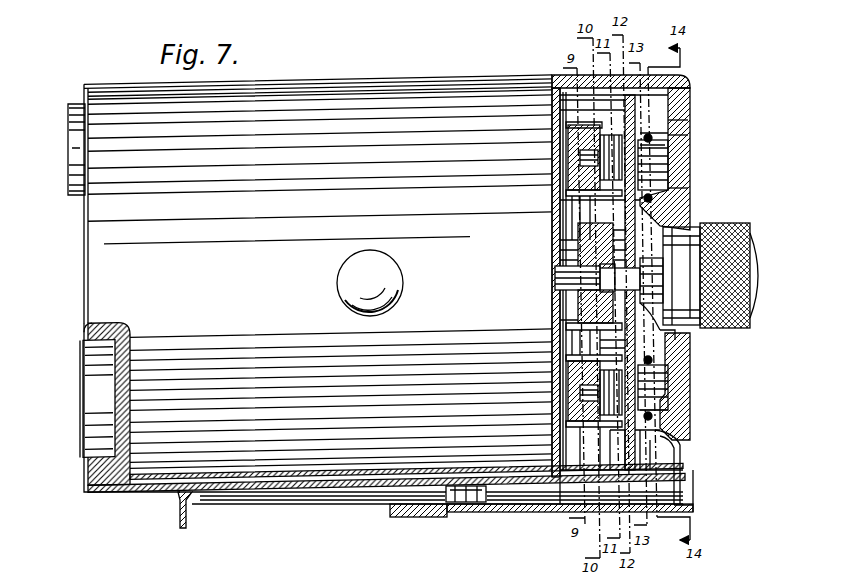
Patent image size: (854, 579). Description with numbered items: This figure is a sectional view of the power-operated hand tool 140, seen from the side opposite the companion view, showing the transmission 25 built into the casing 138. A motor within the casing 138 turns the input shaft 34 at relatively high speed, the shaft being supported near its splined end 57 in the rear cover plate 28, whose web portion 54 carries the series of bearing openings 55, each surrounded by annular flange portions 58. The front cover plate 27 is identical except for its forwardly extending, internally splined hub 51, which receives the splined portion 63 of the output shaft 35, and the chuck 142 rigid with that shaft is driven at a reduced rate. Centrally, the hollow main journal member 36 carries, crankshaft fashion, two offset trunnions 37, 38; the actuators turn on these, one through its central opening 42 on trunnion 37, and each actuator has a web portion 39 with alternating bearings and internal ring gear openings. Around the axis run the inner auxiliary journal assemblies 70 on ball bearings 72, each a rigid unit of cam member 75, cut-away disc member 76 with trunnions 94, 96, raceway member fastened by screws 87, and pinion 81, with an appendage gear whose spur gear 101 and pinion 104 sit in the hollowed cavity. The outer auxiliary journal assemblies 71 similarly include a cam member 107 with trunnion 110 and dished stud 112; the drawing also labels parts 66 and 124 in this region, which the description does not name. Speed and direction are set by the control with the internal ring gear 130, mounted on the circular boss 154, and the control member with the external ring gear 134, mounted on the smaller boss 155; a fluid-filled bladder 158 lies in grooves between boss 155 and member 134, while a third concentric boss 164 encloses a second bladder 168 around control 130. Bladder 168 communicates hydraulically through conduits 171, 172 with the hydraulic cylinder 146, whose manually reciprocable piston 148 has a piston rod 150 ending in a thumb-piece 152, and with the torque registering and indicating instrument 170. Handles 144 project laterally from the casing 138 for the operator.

The transmission 25 is at (656, 359).
The front cover plate 27 is at (667, 122).
The rear cover plate 28 is at (574, 128).
The input shaft 34 is at (560, 276).
The output shaft 35 is at (627, 279).
The main journal member 36 is at (590, 258).
The trunnion 37 is at (575, 246).
The trunnion 38 is at (642, 334).
The web portion 39 is at (580, 227).
The central opening 42 is at (580, 302).
The splined hub 51 is at (673, 326).
The web portion 54 is at (578, 326).
The bearing openings 55 is at (576, 160).
The splined end 57 is at (600, 284).
The flange portions 58 is at (572, 497).
The splined portion 63 is at (658, 277).
The lower plate 66 is at (572, 368).
The inner auxiliary journal assembly 70 is at (688, 492).
The outer auxiliary journal assembly 71 is at (604, 124).
The ball bearings 72 is at (588, 430).
The cam member 75 is at (688, 428).
The cut-away disc member 76 is at (600, 363).
The pinion 81 is at (668, 387).
The screws 87 is at (578, 348).
The trunnion 94 is at (580, 386).
The trunnion 96 is at (600, 414).
The spur gear 101 is at (578, 398).
The pinion 104 is at (670, 372).
The cam member 107 is at (572, 141).
The trunnion 110 is at (578, 170).
The stud 112 is at (570, 190).
The bearing sleeve 124 is at (672, 168).
The internal ring gear control 130 is at (656, 141).
The external ring gear control member 134 is at (690, 186).
The casing 138 is at (128, 307).
The power-operated hand tool 140 is at (118, 502).
The chuck 142 is at (764, 268).
The handles 144 is at (363, 286).
The hydraulic cylinder 146 is at (522, 506).
The piston 148 is at (466, 503).
The piston rod 150 is at (279, 506).
The thumb-piece 152 is at (180, 528).
The circular boss 154 is at (668, 152).
The boss 155 is at (660, 212).
The bladder 158 is at (656, 200).
The third concentric boss 164 is at (689, 124).
The bladder 168 is at (689, 136).
The torque registering and indicating instrument 170 is at (93, 422).
The conduit 171 is at (682, 462).
The conduit 172 is at (350, 472).